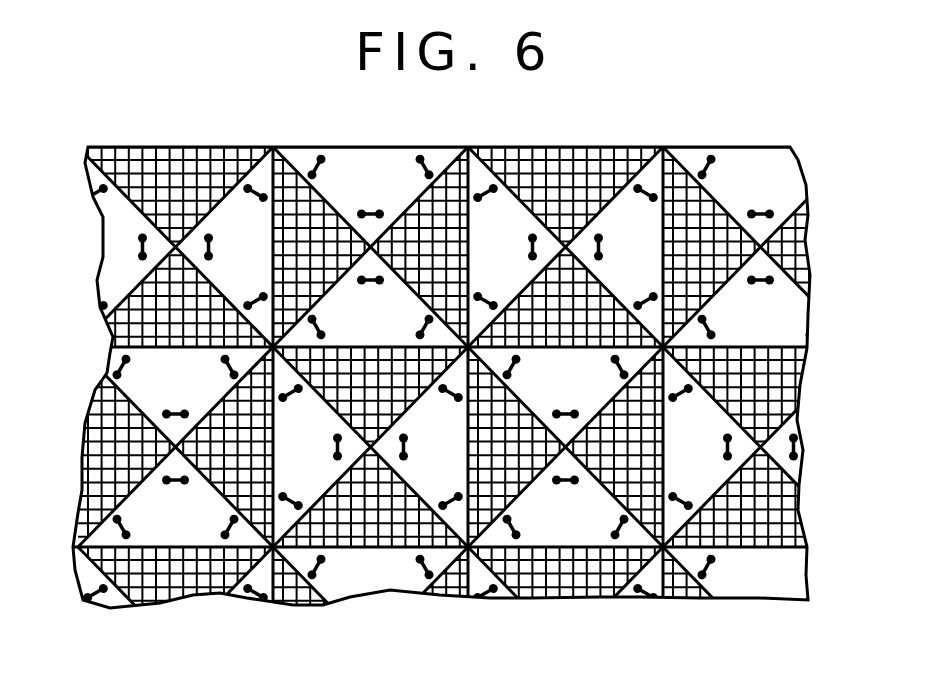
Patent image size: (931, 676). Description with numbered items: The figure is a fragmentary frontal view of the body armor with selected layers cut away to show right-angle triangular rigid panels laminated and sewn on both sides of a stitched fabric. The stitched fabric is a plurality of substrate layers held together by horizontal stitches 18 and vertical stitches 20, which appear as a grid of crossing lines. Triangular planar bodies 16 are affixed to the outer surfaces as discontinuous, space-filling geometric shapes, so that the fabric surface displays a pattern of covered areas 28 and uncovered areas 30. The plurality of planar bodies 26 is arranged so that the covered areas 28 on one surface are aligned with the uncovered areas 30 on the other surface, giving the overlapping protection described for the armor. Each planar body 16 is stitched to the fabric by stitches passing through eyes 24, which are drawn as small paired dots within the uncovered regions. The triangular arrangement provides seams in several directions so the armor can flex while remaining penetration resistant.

The planar bodies 16 is at (745, 577).
The horizontal stitches 18 is at (160, 153).
The vertical stitches 20 is at (198, 153).
The eyes 24 is at (417, 585).
The planar bodies 26 is at (314, 560).
The covered areas 28 is at (378, 165).
The uncovered areas 30 is at (587, 160).